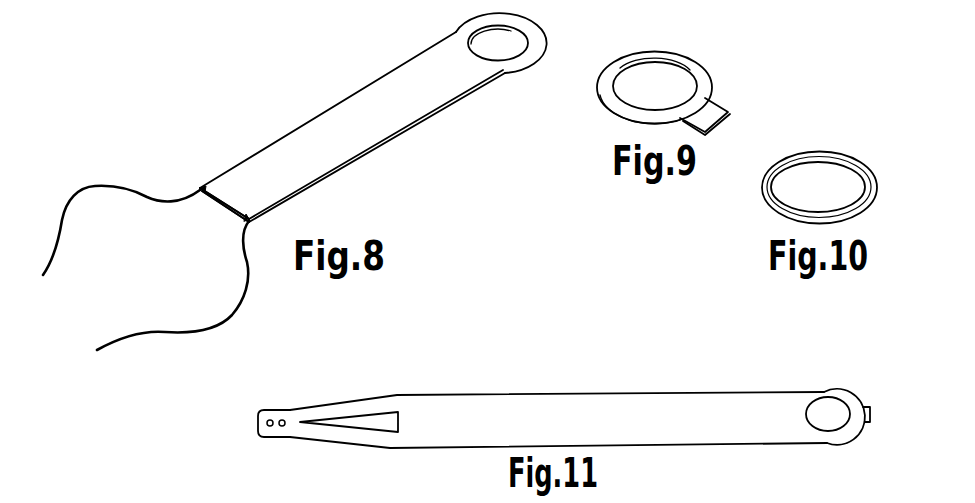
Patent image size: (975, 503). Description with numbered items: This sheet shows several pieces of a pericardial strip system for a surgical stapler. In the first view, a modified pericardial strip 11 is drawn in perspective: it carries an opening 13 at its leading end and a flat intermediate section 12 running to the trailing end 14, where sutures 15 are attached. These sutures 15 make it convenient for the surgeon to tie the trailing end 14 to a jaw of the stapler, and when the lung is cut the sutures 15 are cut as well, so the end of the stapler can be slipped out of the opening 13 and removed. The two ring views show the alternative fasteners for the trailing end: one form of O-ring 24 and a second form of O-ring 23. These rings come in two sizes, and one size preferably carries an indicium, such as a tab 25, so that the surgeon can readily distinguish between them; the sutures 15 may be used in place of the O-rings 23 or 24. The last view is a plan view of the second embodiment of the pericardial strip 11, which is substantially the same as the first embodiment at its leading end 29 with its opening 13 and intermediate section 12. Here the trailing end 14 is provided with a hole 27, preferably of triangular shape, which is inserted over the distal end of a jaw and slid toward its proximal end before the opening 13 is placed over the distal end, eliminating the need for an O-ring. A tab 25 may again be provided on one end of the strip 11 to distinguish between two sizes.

In FIG. 8, the pericardial strip 11 is at (368, 137).
In FIG. 11, the pericardial strip 11 is at (571, 420).
In FIG. 8, the intermediate portion 12 is at (377, 115).
In FIG. 11, the intermediate portion 12 is at (632, 445).
In FIG. 8, the opening 13 is at (527, 50).
In FIG. 11, the opening 13 is at (820, 412).
In FIG. 8, the trailing end 14 is at (217, 207).
In FIG. 11, the trailing end 14 is at (277, 437).
In FIG. 8, the sutures 15 is at (77, 188).
In FIG. 10, the O-ring 23 is at (820, 160).
In FIG. 9, the O-ring 24 is at (657, 63).
In FIG. 9, the tab 25 is at (708, 116).
In FIG. 11, the tab 25 is at (870, 412).
In FIG. 11, the hole 27 is at (360, 422).
In FIG. 11, the leading end 29 is at (835, 438).